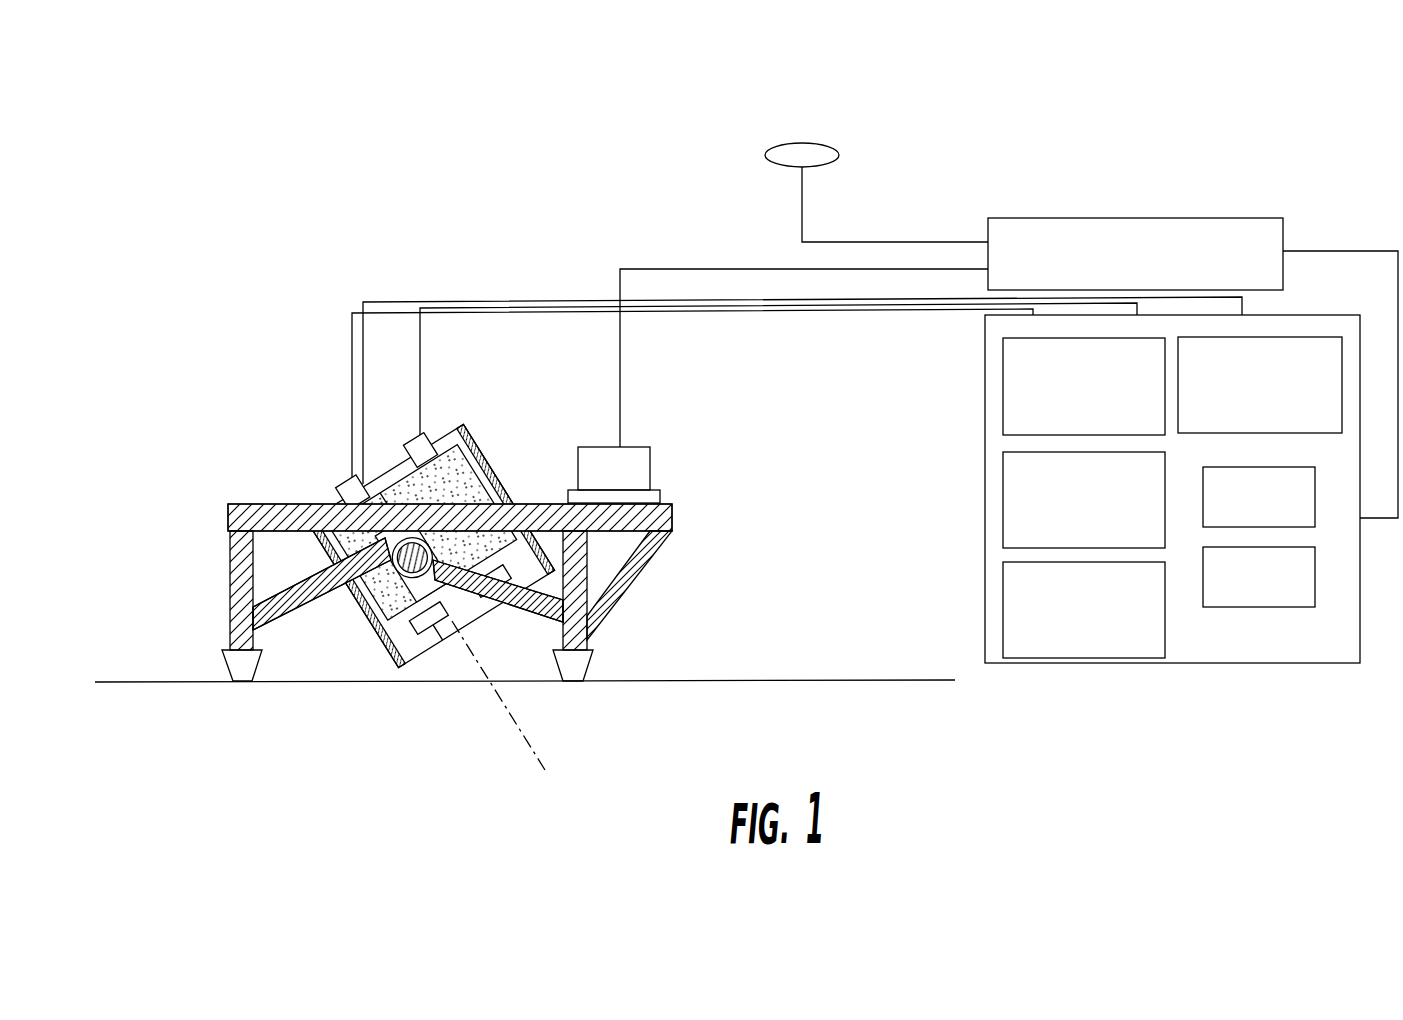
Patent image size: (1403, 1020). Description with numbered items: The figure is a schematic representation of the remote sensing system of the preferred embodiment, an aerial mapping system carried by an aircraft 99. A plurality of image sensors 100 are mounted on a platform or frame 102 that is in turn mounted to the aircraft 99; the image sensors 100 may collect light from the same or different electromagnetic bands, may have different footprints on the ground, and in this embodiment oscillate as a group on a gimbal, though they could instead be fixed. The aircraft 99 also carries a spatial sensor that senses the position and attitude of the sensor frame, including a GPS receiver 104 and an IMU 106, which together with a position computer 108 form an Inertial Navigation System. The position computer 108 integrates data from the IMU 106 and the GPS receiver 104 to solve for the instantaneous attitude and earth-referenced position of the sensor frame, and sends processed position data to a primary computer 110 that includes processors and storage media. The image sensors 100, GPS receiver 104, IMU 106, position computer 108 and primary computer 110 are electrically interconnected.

The aircraft 99 is at (195, 688).
The image sensors 100 is at (448, 468).
The frame 102 is at (672, 505).
The GPS receiver 104 is at (838, 153).
The IMU 106 is at (650, 475).
The position computer 108 is at (1158, 268).
The primary computer 110 is at (1280, 648).